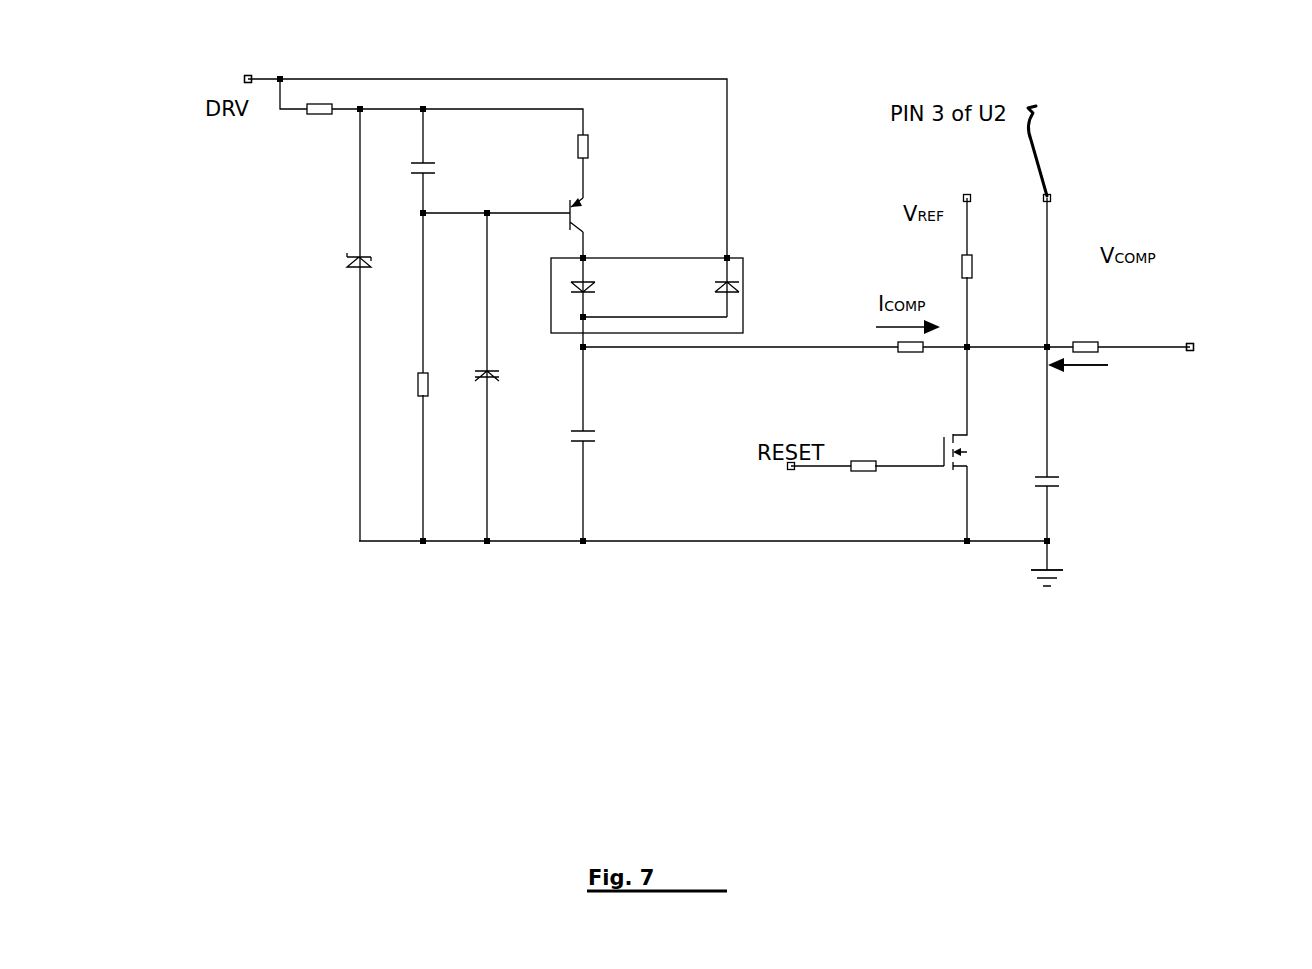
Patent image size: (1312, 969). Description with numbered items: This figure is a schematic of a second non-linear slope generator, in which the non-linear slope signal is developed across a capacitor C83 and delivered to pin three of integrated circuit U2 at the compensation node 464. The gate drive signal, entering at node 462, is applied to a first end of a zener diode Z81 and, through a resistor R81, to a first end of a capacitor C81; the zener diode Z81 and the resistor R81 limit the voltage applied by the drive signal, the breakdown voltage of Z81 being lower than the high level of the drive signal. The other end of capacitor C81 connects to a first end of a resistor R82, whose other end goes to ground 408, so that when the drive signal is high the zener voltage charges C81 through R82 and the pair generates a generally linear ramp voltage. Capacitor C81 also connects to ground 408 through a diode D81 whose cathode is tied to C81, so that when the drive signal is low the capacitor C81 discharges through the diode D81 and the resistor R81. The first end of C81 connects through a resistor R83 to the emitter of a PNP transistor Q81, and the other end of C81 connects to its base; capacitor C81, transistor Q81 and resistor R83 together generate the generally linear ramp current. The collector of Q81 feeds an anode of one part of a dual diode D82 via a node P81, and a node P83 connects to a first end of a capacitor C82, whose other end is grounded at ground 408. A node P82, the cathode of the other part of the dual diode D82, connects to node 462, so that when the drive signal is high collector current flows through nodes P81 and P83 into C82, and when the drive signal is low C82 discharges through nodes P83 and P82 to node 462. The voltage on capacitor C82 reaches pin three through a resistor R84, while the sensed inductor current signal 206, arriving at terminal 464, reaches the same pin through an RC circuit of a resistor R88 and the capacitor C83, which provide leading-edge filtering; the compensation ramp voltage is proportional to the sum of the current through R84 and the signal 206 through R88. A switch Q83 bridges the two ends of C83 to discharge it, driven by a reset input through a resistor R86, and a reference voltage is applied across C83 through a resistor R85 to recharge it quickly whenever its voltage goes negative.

The node 462 is at (246, 77).
The compensation output terminal 464 is at (1193, 345).
The ground 408 is at (1050, 557).
The sensed inductor current signal 206 is at (1087, 390).
The resistor R81 is at (311, 124).
The resistor R82 is at (447, 398).
The resistor R83 is at (611, 151).
The resistor R84 is at (910, 364).
The resistor R85 is at (995, 264).
The resistor R86 is at (863, 483).
The resistor R88 is at (1107, 330).
The capacitor C81 is at (447, 183).
The capacitor C82 is at (611, 448).
The capacitor C83 is at (1075, 496).
The zener diode Z81 is at (333, 256).
The diode D81 is at (515, 371).
The dual diode D82 is at (655, 289).
The PNP transistor Q81 is at (605, 224).
The switch Q83 is at (937, 469).
The node P81 is at (583, 258).
The node P82 is at (727, 258).
The node P83 is at (583, 340).